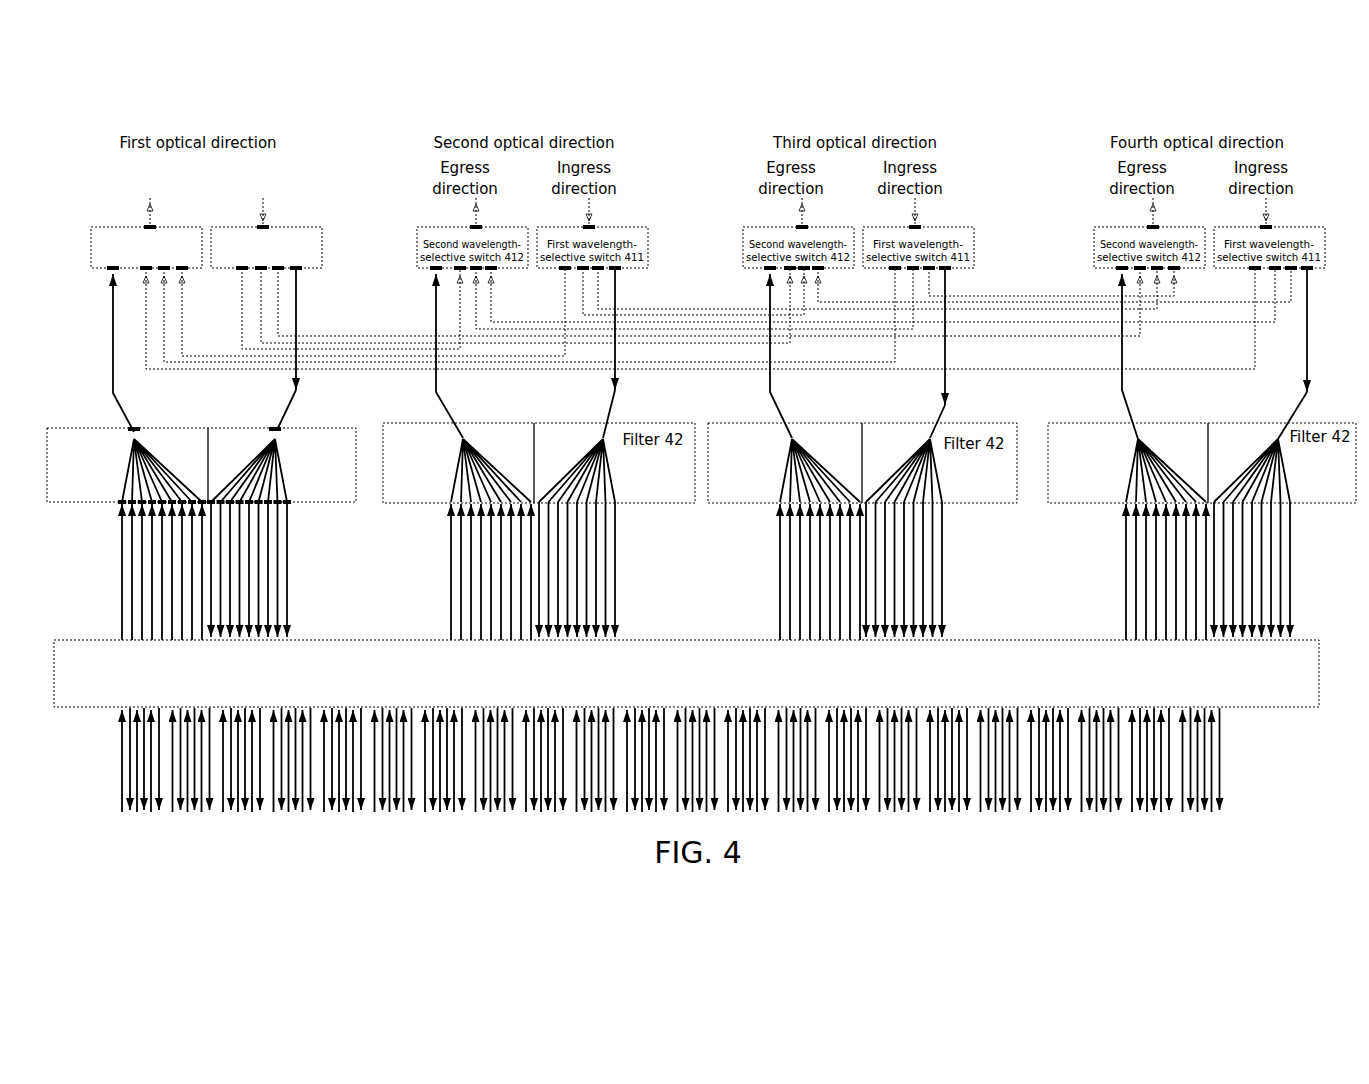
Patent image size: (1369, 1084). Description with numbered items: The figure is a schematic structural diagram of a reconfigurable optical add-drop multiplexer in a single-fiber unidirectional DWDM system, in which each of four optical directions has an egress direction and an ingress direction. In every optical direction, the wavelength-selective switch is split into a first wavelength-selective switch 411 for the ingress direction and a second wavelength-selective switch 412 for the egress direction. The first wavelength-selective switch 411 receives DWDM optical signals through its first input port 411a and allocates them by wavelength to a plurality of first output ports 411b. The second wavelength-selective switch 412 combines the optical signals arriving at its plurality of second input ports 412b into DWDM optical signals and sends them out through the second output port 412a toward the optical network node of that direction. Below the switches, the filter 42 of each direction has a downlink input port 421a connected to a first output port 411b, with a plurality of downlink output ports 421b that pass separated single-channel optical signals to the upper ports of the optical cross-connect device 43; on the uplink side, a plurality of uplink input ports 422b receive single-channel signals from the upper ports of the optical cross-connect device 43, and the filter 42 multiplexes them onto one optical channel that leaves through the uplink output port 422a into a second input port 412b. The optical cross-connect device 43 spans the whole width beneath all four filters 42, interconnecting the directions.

The filter 42 is at (201, 534).
The optical cross-connect device 43 is at (686, 673).
The first wavelength-selective switch 411 is at (266, 213).
The second wavelength-selective switch 412 is at (146, 213).
The first input port 411a is at (265, 226).
The first output ports 411b is at (296, 268).
The second output port 412a is at (150, 226).
The second input ports 412b is at (113, 271).
The downlink input port 421a is at (280, 430).
The downlink output ports 421b is at (290, 505).
The uplink output port 422a is at (138, 430).
The uplink input ports 422b is at (124, 505).